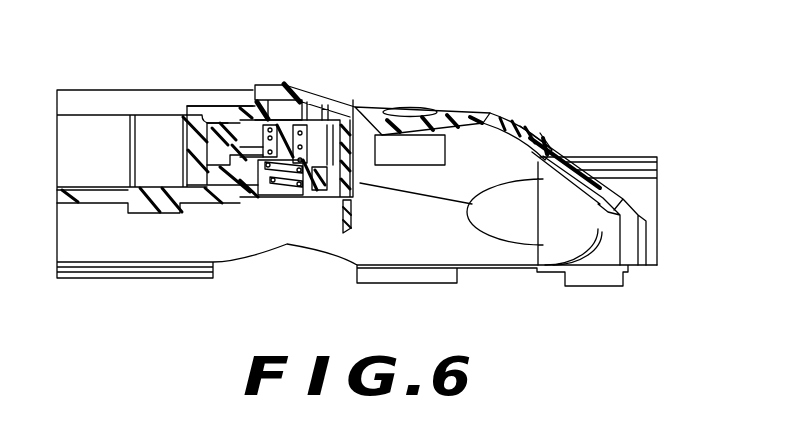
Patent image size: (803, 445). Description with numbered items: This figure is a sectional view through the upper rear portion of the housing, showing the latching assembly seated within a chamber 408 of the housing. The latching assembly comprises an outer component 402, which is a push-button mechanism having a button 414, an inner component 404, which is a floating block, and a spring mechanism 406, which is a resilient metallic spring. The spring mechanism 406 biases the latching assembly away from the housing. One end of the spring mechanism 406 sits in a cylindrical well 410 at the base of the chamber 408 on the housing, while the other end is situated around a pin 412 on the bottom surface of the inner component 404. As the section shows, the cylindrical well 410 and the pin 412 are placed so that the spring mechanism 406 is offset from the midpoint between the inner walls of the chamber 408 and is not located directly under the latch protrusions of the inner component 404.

The outer component 402 is at (285, 77).
The inner component 404 is at (222, 128).
The spring mechanism 406 is at (303, 178).
The chamber 408 is at (340, 174).
The cylindrical well 410 is at (255, 172).
The pin 412 is at (280, 150).
The button 414 is at (305, 82).